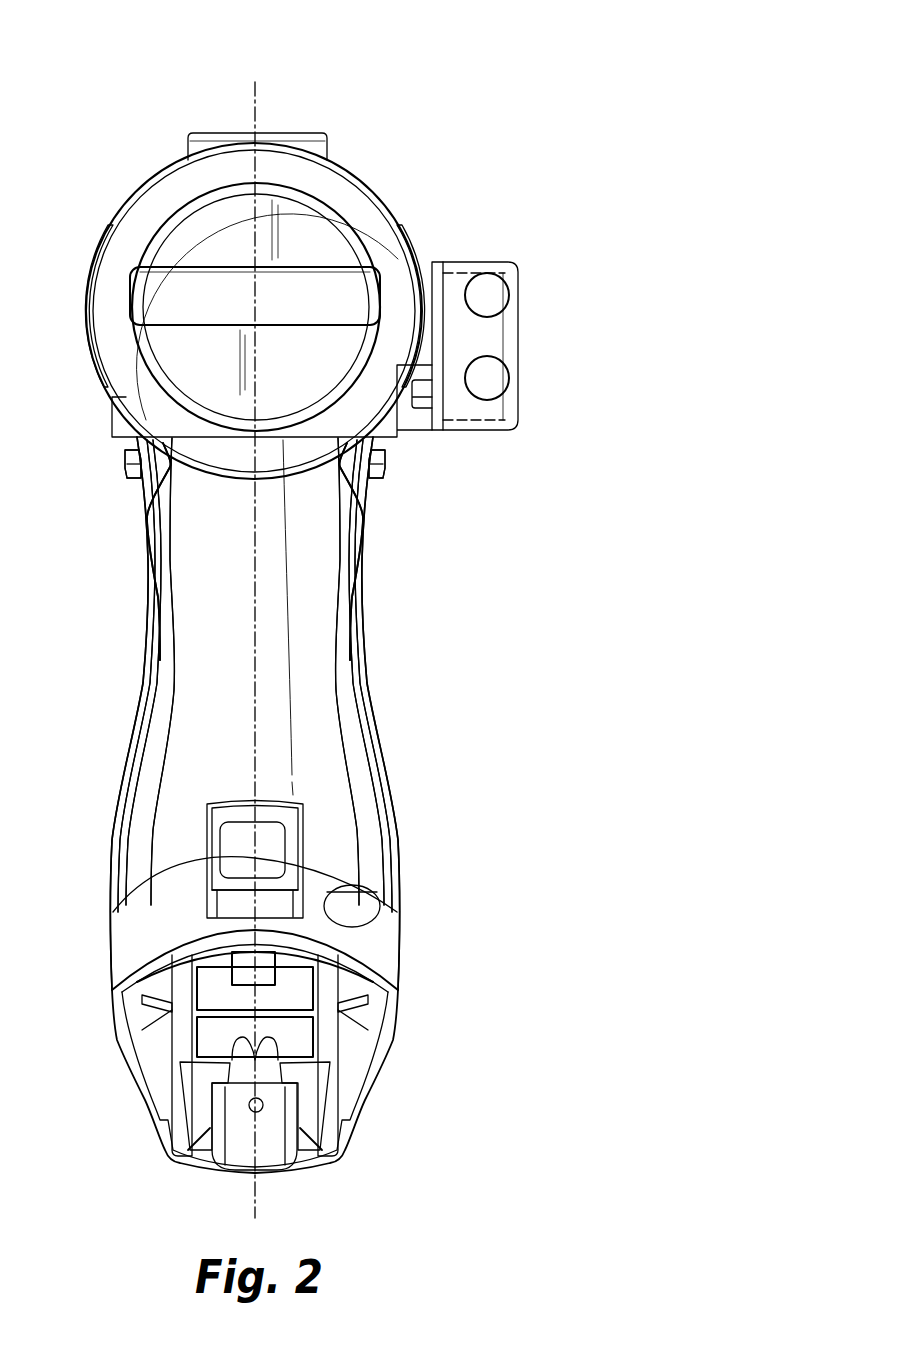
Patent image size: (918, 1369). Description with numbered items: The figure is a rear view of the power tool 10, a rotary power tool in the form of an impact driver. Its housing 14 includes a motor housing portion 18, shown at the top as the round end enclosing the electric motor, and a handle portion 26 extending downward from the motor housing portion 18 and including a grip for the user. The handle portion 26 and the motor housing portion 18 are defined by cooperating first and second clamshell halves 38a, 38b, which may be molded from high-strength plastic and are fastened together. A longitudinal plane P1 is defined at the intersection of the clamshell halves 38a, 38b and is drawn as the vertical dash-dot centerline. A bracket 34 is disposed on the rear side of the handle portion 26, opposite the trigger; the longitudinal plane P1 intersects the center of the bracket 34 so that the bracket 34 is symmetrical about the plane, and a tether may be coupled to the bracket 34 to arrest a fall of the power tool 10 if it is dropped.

The power tool 10 is at (582, 88).
The housing 14 is at (157, 140).
The motor housing portion 18 is at (358, 235).
The handle portion 26 is at (307, 632).
The bracket 34 is at (290, 874).
The first clamshell half 38a is at (155, 761).
The second clamshell half 38b is at (355, 763).
The longitudinal plane P1 is at (256, 107).